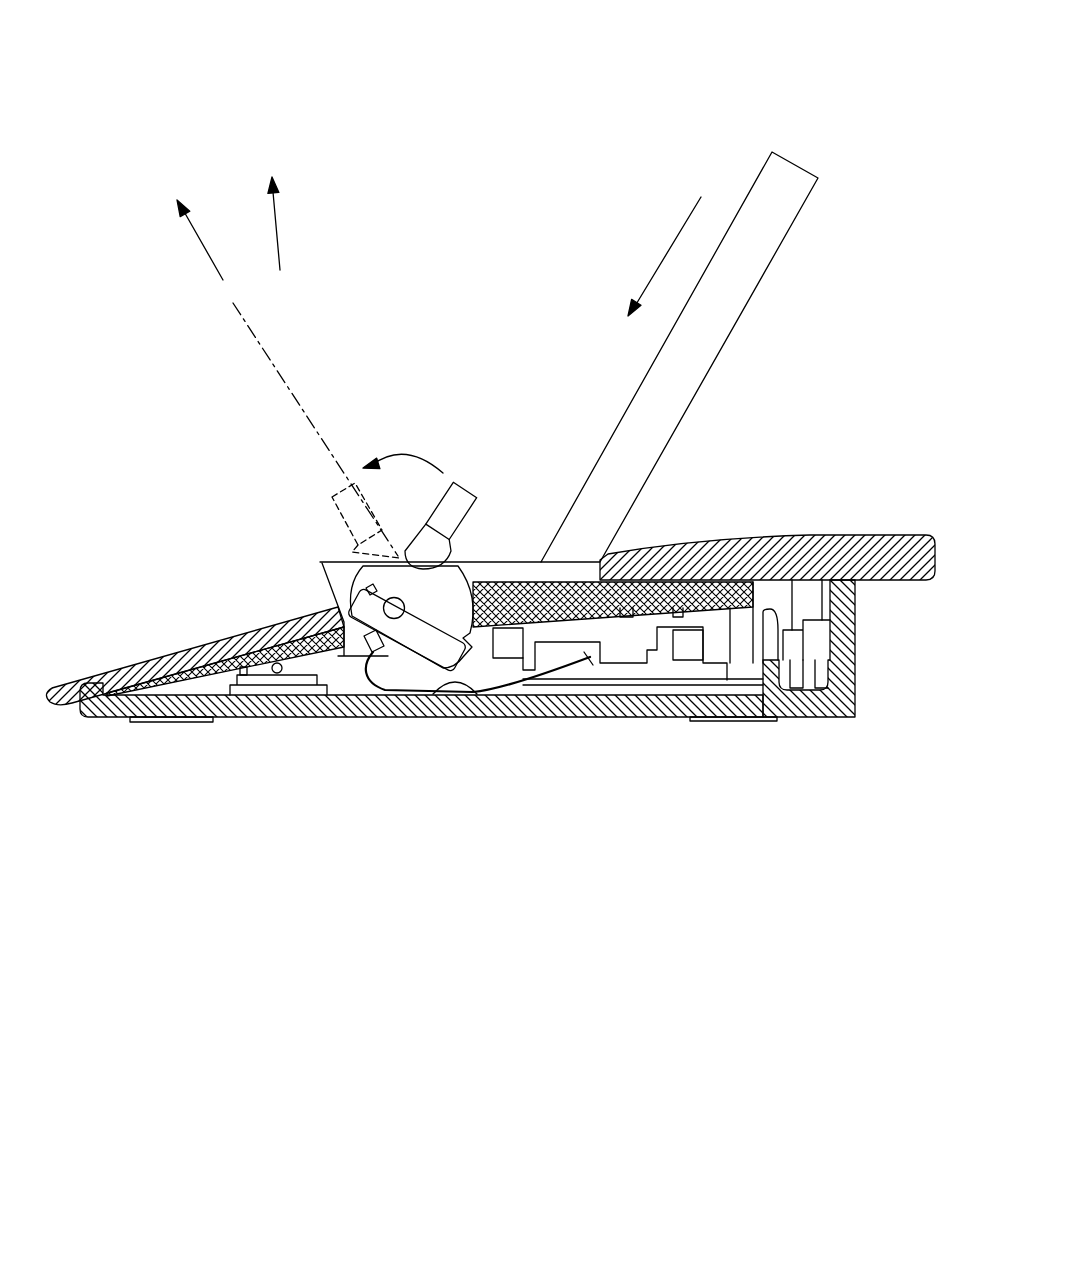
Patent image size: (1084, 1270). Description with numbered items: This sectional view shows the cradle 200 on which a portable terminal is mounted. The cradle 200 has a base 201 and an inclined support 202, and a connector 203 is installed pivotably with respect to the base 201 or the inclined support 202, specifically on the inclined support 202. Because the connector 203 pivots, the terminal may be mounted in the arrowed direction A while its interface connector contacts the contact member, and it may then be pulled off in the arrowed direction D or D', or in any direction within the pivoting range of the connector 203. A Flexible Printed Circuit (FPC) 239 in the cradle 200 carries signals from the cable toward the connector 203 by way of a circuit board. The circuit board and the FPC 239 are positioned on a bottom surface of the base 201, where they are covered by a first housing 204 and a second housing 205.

The cradle 200 is at (397, 37).
The base 201 is at (743, 523).
The inclined support 202 is at (760, 367).
The connector 203 is at (483, 454).
The first housing 204 is at (213, 691).
The second housing 205 is at (579, 738).
The Flexible Printed Circuit (FPC) 239 is at (479, 695).